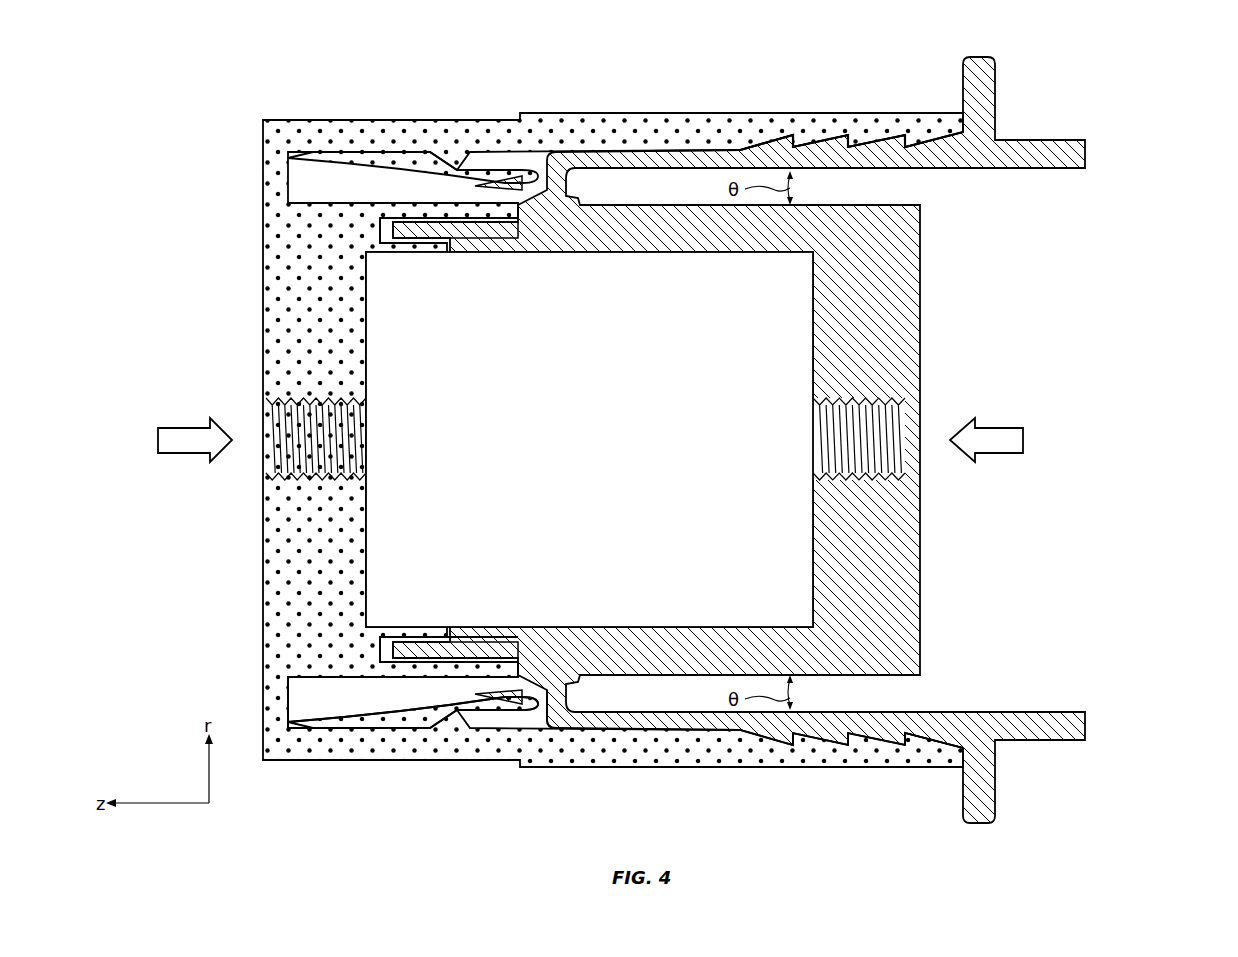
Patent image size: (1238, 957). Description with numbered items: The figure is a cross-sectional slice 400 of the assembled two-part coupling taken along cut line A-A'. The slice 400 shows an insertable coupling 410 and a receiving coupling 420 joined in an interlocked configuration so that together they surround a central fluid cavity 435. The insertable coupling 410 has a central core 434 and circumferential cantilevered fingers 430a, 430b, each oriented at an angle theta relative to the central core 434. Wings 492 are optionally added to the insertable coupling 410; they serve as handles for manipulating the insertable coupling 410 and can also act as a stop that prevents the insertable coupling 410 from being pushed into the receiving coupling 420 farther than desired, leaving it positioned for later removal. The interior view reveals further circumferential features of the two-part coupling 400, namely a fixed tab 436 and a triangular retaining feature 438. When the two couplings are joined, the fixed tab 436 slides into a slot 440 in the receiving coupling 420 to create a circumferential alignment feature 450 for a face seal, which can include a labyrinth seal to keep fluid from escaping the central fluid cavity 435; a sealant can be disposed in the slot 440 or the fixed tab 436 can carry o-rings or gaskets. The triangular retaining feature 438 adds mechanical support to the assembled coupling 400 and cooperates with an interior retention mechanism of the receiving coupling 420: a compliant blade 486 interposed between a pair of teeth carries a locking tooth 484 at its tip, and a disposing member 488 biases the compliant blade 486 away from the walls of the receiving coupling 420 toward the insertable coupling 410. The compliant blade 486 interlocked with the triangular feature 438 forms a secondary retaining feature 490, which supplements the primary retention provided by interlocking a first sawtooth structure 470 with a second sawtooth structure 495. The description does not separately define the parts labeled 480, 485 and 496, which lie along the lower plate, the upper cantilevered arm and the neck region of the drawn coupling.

The cross-sectional slice 400 is at (178, 109).
The insertable coupling 410 is at (992, 426).
The receiving coupling 420 is at (178, 426).
The cantilevered finger 430a is at (1086, 152).
The cantilevered finger 430b is at (1086, 738).
The central core 434 is at (822, 552).
The central fluid cavity 435 is at (606, 450).
The fixed tab 436 is at (467, 640).
The triangular retaining feature 438 is at (482, 712).
The slot 440 is at (372, 226).
The circumferential alignment feature 450 is at (380, 258).
The first sawtooth structure 470 is at (895, 140).
The lower sleeve plate 480 is at (780, 769).
The locking tooth 484 is at (525, 706).
The upper cantilever arm 485 is at (608, 160).
The compliant blade 486 is at (508, 700).
The disposing member 488 is at (440, 718).
The secondary retaining feature 490 is at (535, 112).
The wings 492 is at (997, 106).
The second sawtooth structure 495 is at (300, 680).
The neck 496 is at (538, 733).